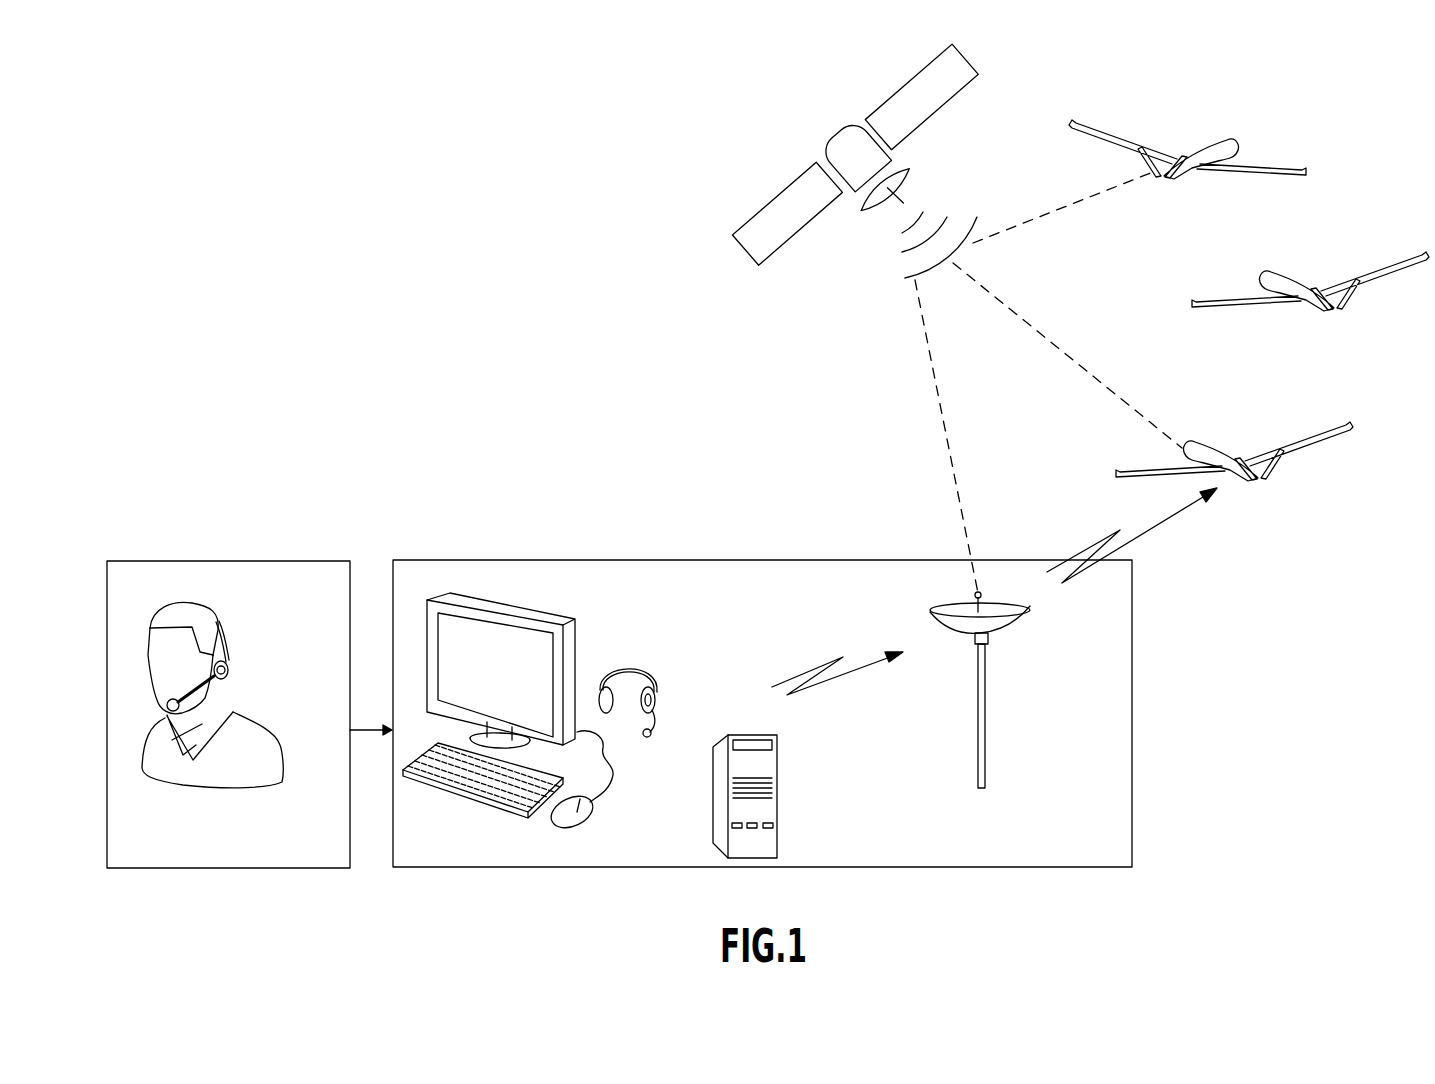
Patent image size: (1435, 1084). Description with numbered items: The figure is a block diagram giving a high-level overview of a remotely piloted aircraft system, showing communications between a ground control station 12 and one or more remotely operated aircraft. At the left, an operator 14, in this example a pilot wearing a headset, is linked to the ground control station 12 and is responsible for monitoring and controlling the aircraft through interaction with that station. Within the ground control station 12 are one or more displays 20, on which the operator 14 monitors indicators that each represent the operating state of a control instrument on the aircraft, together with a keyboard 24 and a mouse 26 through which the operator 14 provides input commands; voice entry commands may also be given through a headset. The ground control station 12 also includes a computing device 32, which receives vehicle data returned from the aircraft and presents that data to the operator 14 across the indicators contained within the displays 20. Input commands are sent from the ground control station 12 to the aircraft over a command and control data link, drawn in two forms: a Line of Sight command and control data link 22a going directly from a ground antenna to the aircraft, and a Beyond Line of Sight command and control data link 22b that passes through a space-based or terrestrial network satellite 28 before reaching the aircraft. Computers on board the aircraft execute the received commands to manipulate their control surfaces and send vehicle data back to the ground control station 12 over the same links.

The ground control station 12 is at (493, 560).
The operator 14 is at (252, 782).
The displays 20 is at (557, 620).
The Line of Sight command and control data link 22a is at (1153, 532).
The Beyond Line of Sight command and control data link 22b is at (938, 403).
The keyboard 24 is at (478, 797).
The mouse 26 is at (575, 817).
The satellite 28 is at (765, 217).
The computing device 32 is at (777, 783).